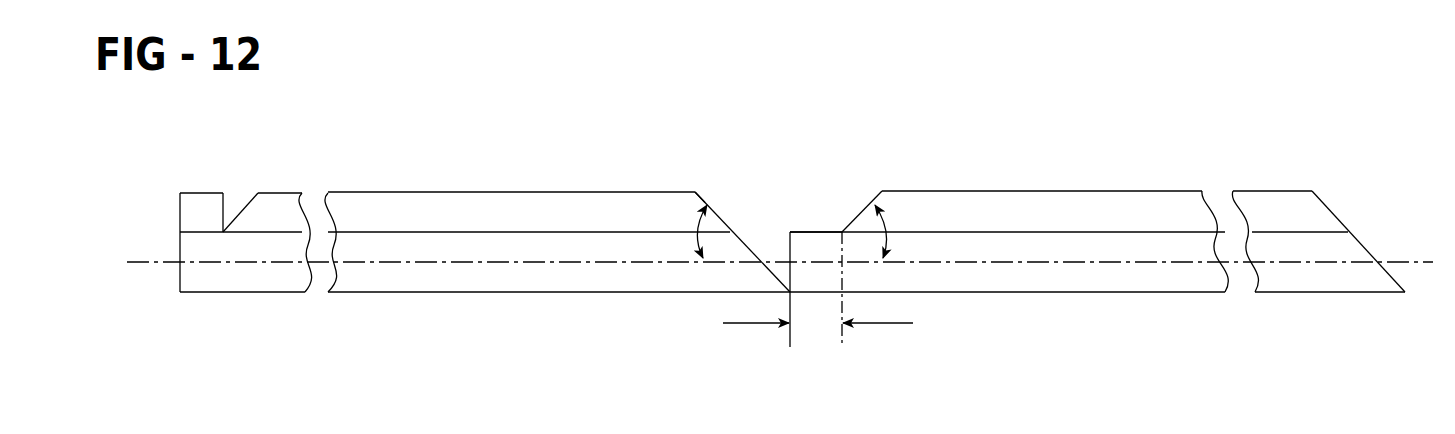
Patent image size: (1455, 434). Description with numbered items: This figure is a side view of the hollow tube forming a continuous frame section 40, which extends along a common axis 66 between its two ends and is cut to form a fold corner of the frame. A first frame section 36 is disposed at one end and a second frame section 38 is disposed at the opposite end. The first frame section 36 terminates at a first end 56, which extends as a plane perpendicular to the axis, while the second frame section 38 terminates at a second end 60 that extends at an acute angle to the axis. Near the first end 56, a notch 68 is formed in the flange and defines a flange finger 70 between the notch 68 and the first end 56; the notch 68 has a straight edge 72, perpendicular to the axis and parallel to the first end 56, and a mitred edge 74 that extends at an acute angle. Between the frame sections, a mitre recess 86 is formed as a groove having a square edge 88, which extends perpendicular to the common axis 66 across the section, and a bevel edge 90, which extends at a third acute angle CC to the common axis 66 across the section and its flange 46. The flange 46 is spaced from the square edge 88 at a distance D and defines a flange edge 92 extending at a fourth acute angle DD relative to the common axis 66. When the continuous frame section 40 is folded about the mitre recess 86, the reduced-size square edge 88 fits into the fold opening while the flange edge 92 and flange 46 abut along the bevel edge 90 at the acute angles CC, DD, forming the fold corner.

The first frame section 36 is at (250, 278).
The second frame section 38 is at (1298, 273).
The continuous frame section 40 is at (440, 170).
The flange 46 is at (683, 203).
The first end 56 is at (180, 212).
The second end 60 is at (1336, 212).
The common axis 66 is at (142, 258).
The notch 68 is at (241, 172).
The flange finger 70 is at (202, 203).
The straight edge 72 is at (224, 190).
The mitred edge 74 is at (248, 201).
The mitre recess 86 is at (750, 227).
The square edge 88 is at (788, 247).
The bevel edge 90 is at (708, 202).
The flange edge 92 is at (863, 203).
The third acute angle CC is at (693, 225).
The fourth acute angle DD is at (880, 225).
The distance D is at (818, 289).